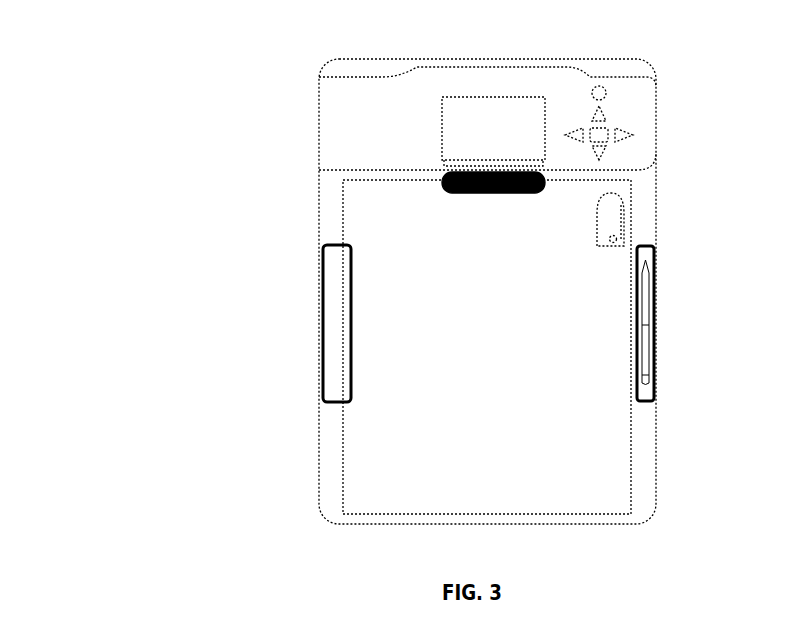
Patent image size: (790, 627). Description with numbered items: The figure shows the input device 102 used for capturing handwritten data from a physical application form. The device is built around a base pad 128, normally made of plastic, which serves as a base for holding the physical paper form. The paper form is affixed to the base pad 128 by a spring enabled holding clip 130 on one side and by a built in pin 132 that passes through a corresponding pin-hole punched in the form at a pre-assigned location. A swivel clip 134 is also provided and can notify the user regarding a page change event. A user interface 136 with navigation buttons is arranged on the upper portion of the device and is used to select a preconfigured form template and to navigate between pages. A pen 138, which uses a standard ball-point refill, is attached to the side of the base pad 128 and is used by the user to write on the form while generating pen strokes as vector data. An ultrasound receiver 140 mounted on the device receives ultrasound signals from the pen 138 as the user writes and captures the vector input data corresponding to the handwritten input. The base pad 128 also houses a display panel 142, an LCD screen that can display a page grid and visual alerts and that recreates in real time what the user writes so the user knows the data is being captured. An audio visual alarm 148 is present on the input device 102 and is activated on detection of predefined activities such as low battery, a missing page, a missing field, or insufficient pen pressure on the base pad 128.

The input device 102 is at (117, 120).
The base pad 128 is at (631, 459).
The spring enabled holding clip 130 is at (319, 331).
The built in pin 132 is at (625, 240).
The swivel clip 134 is at (612, 193).
The user interface 136 is at (633, 135).
The pen 138 is at (656, 303).
The ultrasound receiver 140 is at (443, 183).
The display panel 142 is at (465, 97).
The audio visual alarm 148 is at (606, 93).